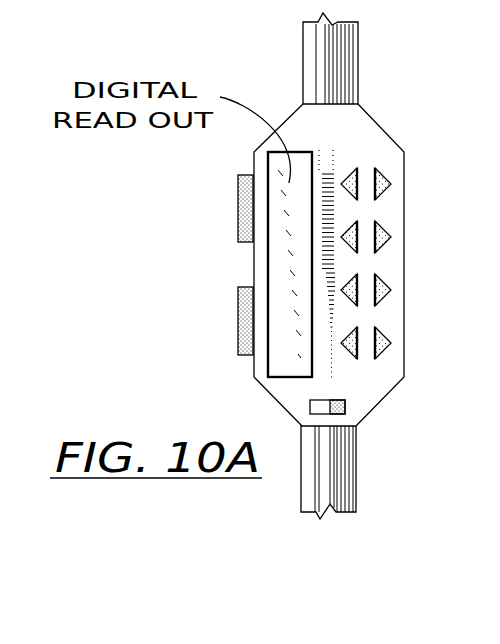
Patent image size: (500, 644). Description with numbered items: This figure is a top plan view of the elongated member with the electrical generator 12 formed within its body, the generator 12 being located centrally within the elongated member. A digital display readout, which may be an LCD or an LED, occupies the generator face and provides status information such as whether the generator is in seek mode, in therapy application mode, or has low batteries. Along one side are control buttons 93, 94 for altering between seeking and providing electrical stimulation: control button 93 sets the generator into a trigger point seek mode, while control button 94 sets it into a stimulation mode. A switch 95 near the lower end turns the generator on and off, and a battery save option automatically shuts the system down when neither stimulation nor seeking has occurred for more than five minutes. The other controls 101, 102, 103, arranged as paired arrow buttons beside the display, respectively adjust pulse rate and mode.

The electrical generator 12 is at (326, 133).
The control button 93 is at (245, 207).
The control button 94 is at (245, 325).
The switch 95 is at (337, 414).
The control 101 is at (375, 168).
The control 102 is at (377, 232).
The control 103 is at (377, 290).